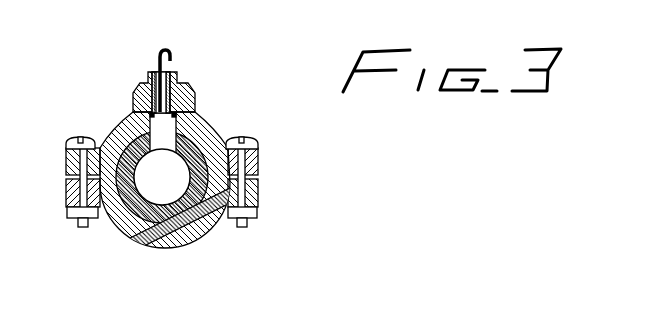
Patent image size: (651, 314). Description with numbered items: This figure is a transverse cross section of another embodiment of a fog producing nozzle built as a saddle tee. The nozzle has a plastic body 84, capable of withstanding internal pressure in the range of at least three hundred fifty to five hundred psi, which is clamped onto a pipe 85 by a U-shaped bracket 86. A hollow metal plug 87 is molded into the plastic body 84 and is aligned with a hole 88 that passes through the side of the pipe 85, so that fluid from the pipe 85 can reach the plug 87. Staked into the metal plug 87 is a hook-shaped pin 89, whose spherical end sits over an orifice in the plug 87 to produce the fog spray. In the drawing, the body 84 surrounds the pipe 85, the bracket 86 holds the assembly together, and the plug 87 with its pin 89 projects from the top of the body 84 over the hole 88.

The body 84 is at (128, 118).
The pipe 85 is at (145, 232).
The U-shaped bracket 86 is at (186, 238).
The hollow metal plug 87 is at (178, 78).
The hole 88 is at (162, 177).
The hook-shaped pin 89 is at (152, 55).